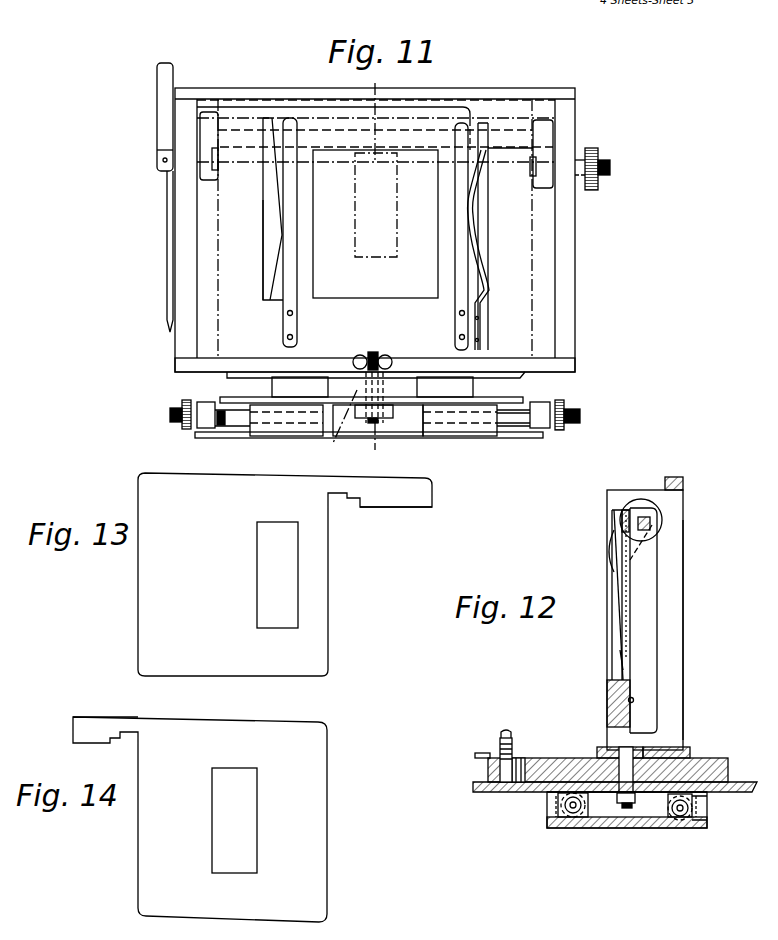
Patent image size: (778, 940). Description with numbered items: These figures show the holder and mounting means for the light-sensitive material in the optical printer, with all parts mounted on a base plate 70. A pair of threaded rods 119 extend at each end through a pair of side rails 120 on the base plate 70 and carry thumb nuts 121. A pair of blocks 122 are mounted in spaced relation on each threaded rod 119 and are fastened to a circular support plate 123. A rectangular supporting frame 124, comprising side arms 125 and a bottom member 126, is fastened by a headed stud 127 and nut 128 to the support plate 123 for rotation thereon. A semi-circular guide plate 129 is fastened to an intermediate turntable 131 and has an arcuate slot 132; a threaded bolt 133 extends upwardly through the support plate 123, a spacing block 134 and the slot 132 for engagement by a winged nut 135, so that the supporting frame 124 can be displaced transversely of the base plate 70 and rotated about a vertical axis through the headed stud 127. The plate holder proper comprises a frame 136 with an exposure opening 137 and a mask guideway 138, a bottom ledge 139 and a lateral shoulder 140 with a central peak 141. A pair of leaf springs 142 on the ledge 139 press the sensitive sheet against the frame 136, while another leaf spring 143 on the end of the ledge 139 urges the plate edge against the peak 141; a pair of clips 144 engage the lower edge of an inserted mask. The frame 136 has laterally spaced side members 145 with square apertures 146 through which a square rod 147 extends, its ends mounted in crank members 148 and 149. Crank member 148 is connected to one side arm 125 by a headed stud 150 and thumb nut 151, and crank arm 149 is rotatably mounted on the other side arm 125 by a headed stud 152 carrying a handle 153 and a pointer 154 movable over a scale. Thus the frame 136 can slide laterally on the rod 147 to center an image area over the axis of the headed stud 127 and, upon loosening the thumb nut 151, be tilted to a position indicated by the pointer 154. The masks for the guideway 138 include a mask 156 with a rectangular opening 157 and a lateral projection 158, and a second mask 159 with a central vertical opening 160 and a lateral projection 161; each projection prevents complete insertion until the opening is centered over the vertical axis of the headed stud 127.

In FIG. 11, the base plate 70 is at (478, 438).
In FIG. 12, the base plate 70 is at (650, 828).
In FIG. 11, the threaded rods 119 is at (516, 425).
In FIG. 12, the threaded rods 119 is at (573, 818).
In FIG. 11, the side rails 120 is at (203, 428).
In FIG. 12, the side rails 120 is at (705, 806).
In FIG. 11, the thumb nuts 121 is at (178, 420).
In FIG. 12, the thumb nuts 121 is at (710, 825).
In FIG. 11, the blocks 122 is at (262, 436).
In FIG. 12, the blocks 122 is at (575, 828).
In FIG. 11, the circular support plate 123 is at (230, 397).
In FIG. 12, the circular support plate 123 is at (548, 794).
In FIG. 11, the rectangular supporting frame 124 is at (577, 108).
In FIG. 12, the rectangular supporting frame 124 is at (684, 534).
In FIG. 11, the side arms 125 is at (185, 215).
In FIG. 12, the side arms 125 is at (672, 640).
In FIG. 11, the bottom member 126 is at (195, 365).
In FIG. 12, the bottom member 126 is at (690, 757).
In FIG. 11, the headed stud 127 is at (342, 437).
In FIG. 12, the headed stud 127 is at (632, 770).
In FIG. 11, the nut 128 is at (365, 430).
In FIG. 12, the nut 128 is at (627, 808).
In FIG. 11, the semi-circular guide plate 129 is at (515, 368).
In FIG. 12, the semi-circular guide plate 129 is at (548, 760).
In FIG. 11, the intermediate turntable 131 is at (463, 388).
In FIG. 12, the intermediate turntable 131 is at (585, 758).
In FIG. 12, the arcuate slot 132 is at (513, 782).
In FIG. 11, the threaded bolt 133 is at (378, 352).
In FIG. 12, the threaded bolt 133 is at (490, 756).
In FIG. 11, the spacing block 134 is at (300, 383).
In FIG. 12, the spacing block 134 is at (487, 786).
In FIG. 11, the winged nut 135 is at (356, 355).
In FIG. 12, the winged nut 135 is at (500, 738).
In FIG. 11, the frame 136 is at (275, 118).
In FIG. 12, the frame 136 is at (626, 512).
In FIG. 11, the exposure opening 137 is at (484, 262).
In FIG. 12, the exposure opening 137 is at (622, 653).
In FIG. 12, the mask guideway 138 is at (632, 608).
In FIG. 12, the bottom ledge 139 is at (612, 684).
In FIG. 11, the lateral shoulder 140 is at (268, 270).
In FIG. 12, the lateral shoulder 140 is at (616, 560).
In FIG. 11, the central peak 141 is at (278, 215).
In FIG. 12, the central peak 141 is at (618, 592).
In FIG. 11, the leaf springs 142 is at (290, 274).
In FIG. 12, the leaf springs 142 is at (613, 518).
In FIG. 11, the leaf spring 143 is at (472, 210).
In FIG. 12, the clips 144 is at (632, 690).
In FIG. 12, the side members 145 is at (655, 580).
In FIG. 11, the square apertures 146 is at (477, 125).
In FIG. 12, the square apertures 146 is at (652, 522).
In FIG. 11, the square rod 147 is at (503, 148).
In FIG. 12, the square rod 147 is at (640, 515).
In FIG. 11, the crank member 148 is at (541, 125).
In FIG. 11, the crank member 149 is at (206, 112).
In FIG. 12, the crank member 149 is at (676, 477).
In FIG. 11, the headed stud 150 is at (533, 170).
In FIG. 11, the thumb nut 151 is at (590, 147).
In FIG. 11, the headed stud 152 is at (215, 170).
In FIG. 11, the handle 153 is at (160, 100).
In FIG. 11, the pointer 154 is at (168, 272).
In FIG. 13, the mask 156 is at (155, 570).
In FIG. 13, the rectangular opening 157 is at (296, 570).
In FIG. 13, the projection 158 is at (395, 503).
In FIG. 11, the second mask 159 is at (424, 105).
In FIG. 14, the second mask 159 is at (310, 836).
In FIG. 11, the central vertical opening 160 is at (393, 227).
In FIG. 14, the central vertical opening 160 is at (255, 790).
In FIG. 14, the lateral projection 161 is at (108, 697).